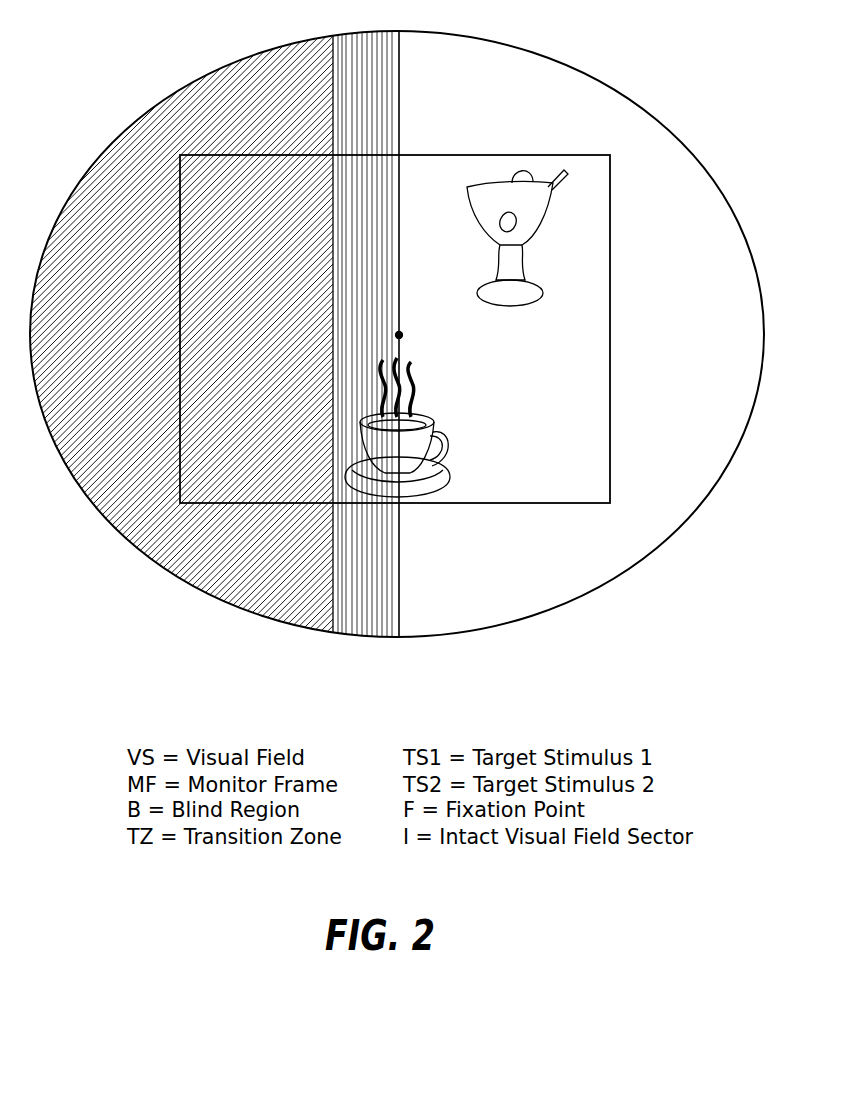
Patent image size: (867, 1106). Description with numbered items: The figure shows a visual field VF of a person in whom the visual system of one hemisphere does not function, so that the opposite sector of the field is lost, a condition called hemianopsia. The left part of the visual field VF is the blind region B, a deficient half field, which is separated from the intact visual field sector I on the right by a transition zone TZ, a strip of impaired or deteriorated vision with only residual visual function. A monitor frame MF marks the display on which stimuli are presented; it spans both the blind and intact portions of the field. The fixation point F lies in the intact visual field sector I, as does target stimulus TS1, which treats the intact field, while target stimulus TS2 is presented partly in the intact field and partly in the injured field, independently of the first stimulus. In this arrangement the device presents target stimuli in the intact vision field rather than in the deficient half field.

The visual field VF is at (123, 543).
The monitor frame MF is at (208, 503).
The blind region B is at (300, 595).
The transition zone TZ is at (377, 607).
The target stimulus 1 TS1 is at (527, 288).
The target stimulus 2 TS2 is at (430, 480).
The fixation point F is at (402, 335).
The intact visual field sector I is at (678, 190).